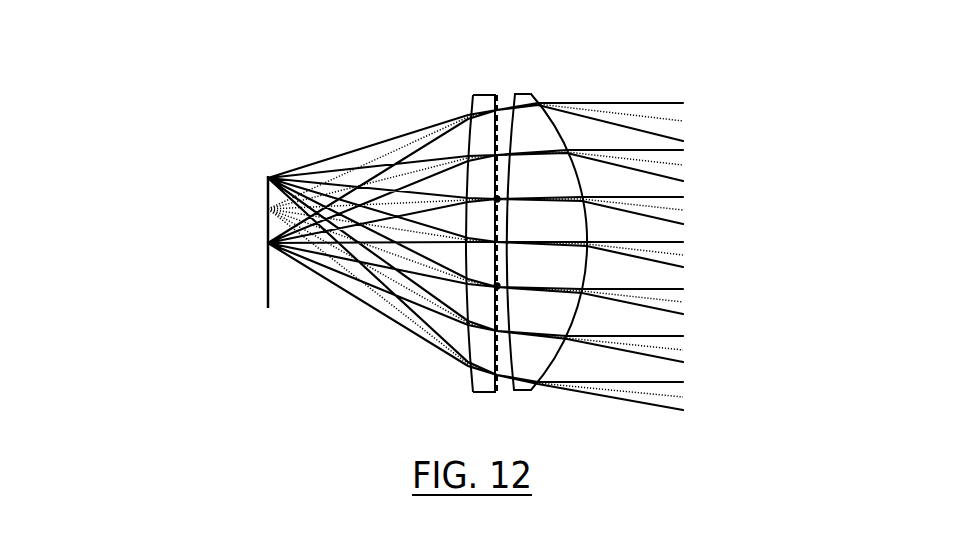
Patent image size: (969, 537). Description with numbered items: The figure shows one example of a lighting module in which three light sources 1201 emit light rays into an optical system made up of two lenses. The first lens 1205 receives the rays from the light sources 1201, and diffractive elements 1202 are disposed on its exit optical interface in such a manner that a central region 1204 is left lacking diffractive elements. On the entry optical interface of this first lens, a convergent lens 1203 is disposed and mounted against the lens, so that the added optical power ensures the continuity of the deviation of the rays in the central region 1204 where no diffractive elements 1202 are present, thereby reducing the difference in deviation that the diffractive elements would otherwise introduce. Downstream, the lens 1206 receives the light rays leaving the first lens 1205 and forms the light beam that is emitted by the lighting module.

The light sources 1201 is at (267, 243).
The diffractive elements 1202 is at (489, 94).
The convergent lens 1203 is at (466, 237).
The central region 1204 is at (528, 242).
The first lens 1205 is at (473, 392).
The lens 1206 is at (520, 392).